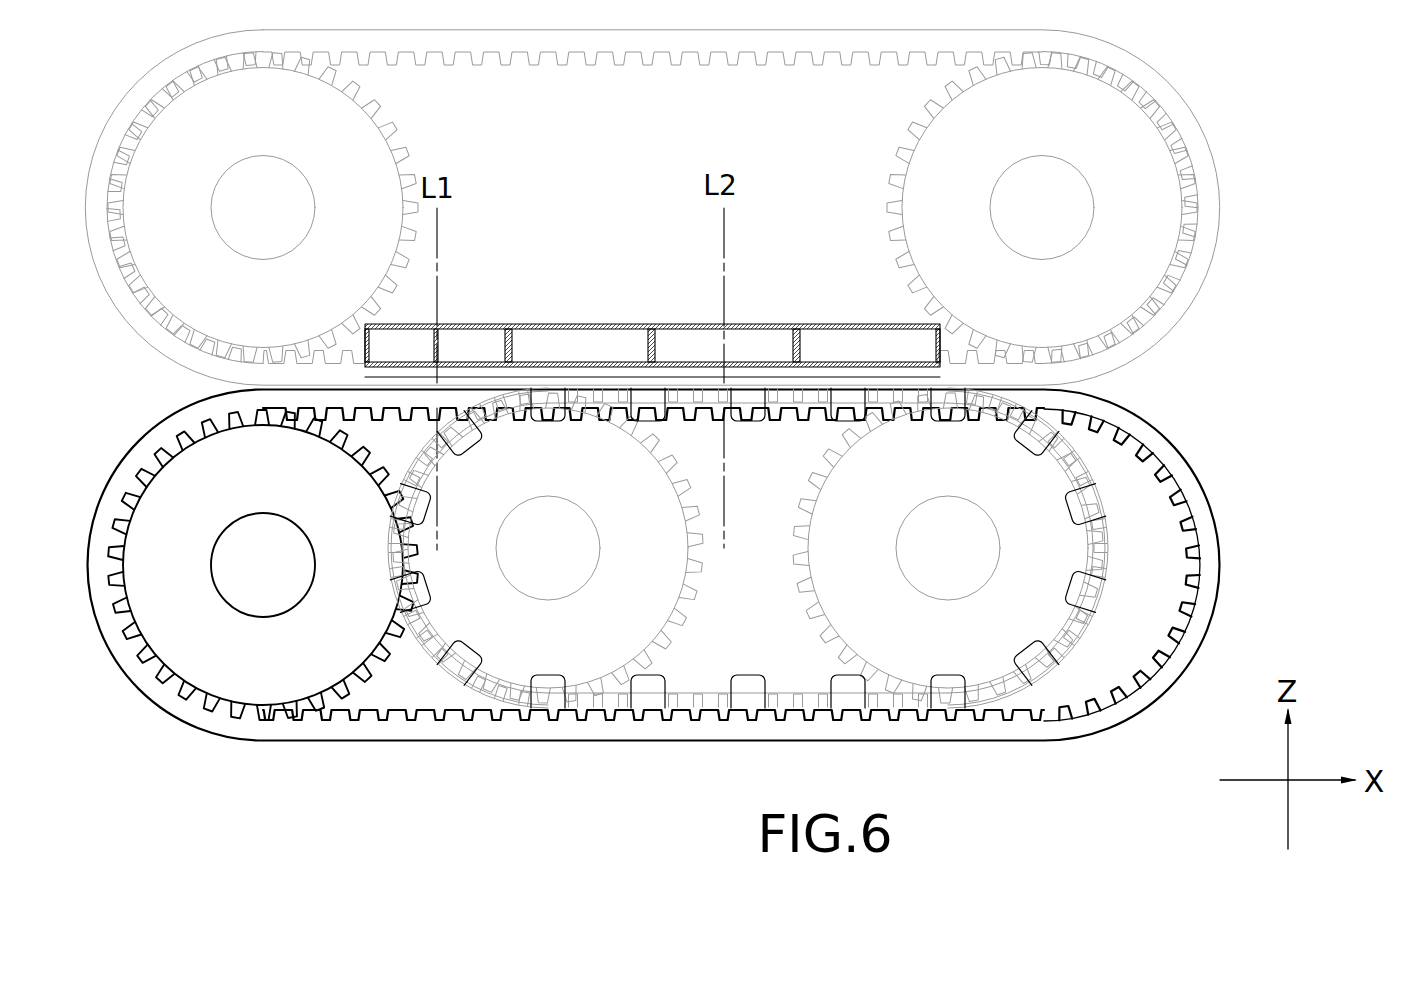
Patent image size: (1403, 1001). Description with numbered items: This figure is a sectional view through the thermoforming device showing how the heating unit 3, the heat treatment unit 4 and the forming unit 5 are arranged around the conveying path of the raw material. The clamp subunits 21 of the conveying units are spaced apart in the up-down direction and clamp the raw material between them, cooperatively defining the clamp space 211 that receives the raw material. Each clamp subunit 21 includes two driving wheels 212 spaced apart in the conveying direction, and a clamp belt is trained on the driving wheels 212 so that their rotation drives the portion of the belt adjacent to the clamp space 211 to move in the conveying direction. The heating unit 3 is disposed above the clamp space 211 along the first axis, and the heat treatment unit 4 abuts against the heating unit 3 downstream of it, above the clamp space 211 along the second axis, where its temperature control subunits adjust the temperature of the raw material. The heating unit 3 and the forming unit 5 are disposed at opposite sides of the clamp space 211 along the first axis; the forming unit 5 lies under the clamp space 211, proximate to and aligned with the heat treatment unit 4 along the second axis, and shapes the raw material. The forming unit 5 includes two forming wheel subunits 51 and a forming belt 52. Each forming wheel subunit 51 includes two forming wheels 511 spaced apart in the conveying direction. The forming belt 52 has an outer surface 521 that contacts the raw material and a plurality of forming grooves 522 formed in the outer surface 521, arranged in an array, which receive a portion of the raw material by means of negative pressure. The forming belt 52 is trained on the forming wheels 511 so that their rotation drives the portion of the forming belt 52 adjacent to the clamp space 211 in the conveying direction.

The heating unit 3 is at (652, 293).
The heat treatment unit 4 is at (692, 325).
The forming unit 5 is at (838, 605).
The clamp subunit 21 is at (681, 593).
The forming wheel subunit 51 is at (585, 655).
The forming belt 52 is at (838, 548).
The clamp space 211 is at (265, 387).
The driving wheel 212 is at (1145, 595).
The forming wheel 511 is at (513, 650).
The outer surface 521 is at (1086, 462).
The forming groove 522 is at (1086, 505).